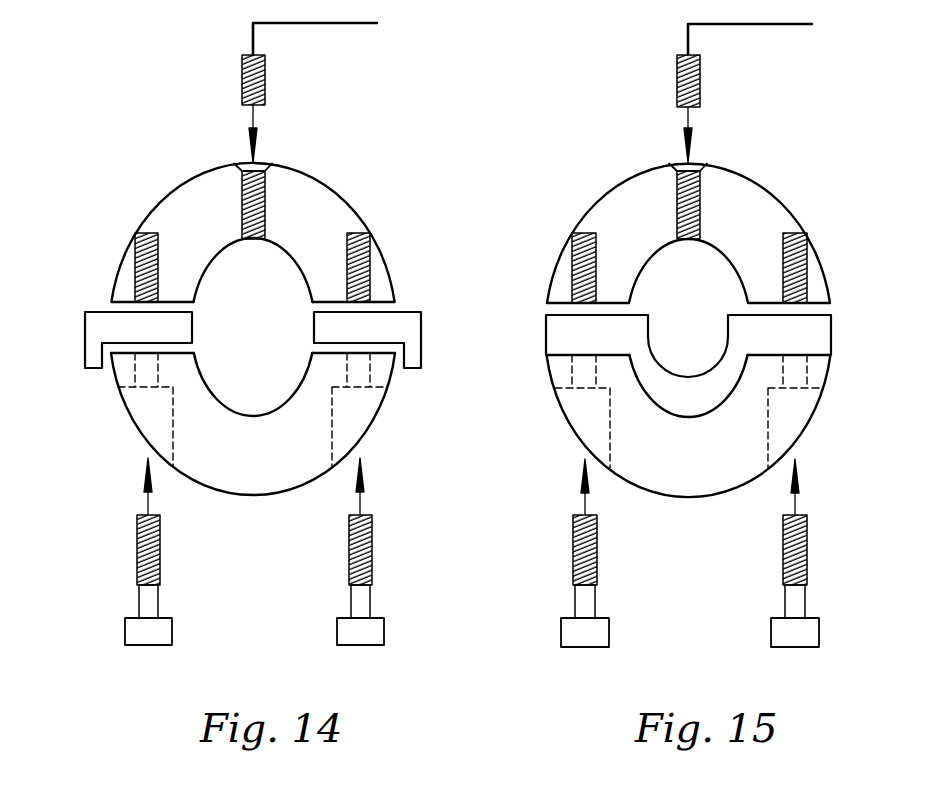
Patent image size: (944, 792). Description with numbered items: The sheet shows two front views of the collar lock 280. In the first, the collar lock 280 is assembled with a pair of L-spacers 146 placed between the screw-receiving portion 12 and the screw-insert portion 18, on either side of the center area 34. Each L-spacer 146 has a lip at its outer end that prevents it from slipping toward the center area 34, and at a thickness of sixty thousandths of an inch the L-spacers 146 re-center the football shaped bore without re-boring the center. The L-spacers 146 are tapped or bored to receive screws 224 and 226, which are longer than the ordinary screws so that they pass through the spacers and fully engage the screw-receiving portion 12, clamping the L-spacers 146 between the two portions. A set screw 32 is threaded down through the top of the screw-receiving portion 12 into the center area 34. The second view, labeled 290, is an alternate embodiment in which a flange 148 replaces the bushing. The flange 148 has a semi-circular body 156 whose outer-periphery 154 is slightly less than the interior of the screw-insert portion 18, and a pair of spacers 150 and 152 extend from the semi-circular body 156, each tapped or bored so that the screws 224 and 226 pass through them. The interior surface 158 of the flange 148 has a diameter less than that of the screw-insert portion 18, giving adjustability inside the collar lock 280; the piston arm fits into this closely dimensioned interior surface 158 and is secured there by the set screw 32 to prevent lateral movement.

In FIG. 14, the screw-receiving portion 12 is at (300, 205).
In FIG. 15, the screw-receiving portion 12 is at (746, 200).
In FIG. 14, the screw-insert portion 18 is at (338, 405).
In FIG. 15, the screw-insert portion 18 is at (788, 412).
In FIG. 14, the set screw 32 is at (266, 80).
In FIG. 15, the set screw 32 is at (702, 80).
In FIG. 14, the center area 34 is at (230, 278).
In FIG. 14, the L-spacers 146 is at (97, 328).
In FIG. 15, the flange 148 is at (572, 334).
In FIG. 15, the spacer 150 is at (832, 340).
In FIG. 15, the spacer 152 is at (545, 326).
In FIG. 15, the outer-periphery 154 is at (717, 409).
In FIG. 15, the semi-circular body 156 is at (682, 392).
In FIG. 15, the interior surface 158 is at (666, 364).
In FIG. 14, the screw 224 is at (150, 628).
In FIG. 15, the screw 224 is at (587, 636).
In FIG. 14, the screw 226 is at (362, 632).
In FIG. 15, the screw 226 is at (788, 637).
In FIG. 14, the collar lock 280 is at (378, 176).
In FIG. 15, the clamp assembly 290 is at (630, 150).